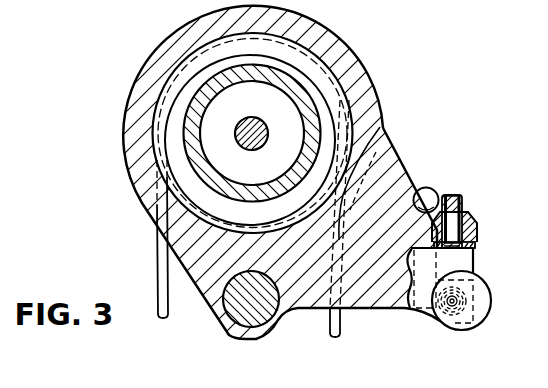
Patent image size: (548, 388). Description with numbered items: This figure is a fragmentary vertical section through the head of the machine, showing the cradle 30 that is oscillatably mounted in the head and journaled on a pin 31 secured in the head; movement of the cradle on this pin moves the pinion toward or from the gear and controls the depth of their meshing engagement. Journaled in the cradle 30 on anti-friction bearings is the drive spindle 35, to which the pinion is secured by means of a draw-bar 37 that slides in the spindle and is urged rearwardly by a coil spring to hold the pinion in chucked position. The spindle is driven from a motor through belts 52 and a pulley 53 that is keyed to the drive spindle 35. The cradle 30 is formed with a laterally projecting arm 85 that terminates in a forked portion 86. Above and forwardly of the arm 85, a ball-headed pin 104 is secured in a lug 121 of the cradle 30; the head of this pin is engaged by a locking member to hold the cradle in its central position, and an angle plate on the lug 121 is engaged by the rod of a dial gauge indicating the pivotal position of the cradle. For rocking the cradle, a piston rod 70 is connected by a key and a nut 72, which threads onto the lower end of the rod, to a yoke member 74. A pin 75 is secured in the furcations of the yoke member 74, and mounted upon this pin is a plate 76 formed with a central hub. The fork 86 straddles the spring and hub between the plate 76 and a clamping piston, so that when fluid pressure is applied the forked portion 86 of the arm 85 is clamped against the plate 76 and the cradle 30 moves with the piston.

The cradle 30 is at (372, 91).
The drive spindle 35 is at (244, 74).
The draw-bar 37 is at (257, 140).
The pulley 53 is at (383, 127).
The lug 121 is at (391, 172).
The ball-headed pin 104 is at (429, 188).
The piston rod 70 is at (462, 196).
The yoke member 74 is at (478, 222).
The nut 72 is at (478, 246).
The plate 76 is at (482, 298).
The pin 75 is at (448, 312).
The forked portion 86 is at (458, 332).
The arm 85 is at (387, 296).
The belts 52 is at (329, 326).
The pin 31 is at (236, 314).